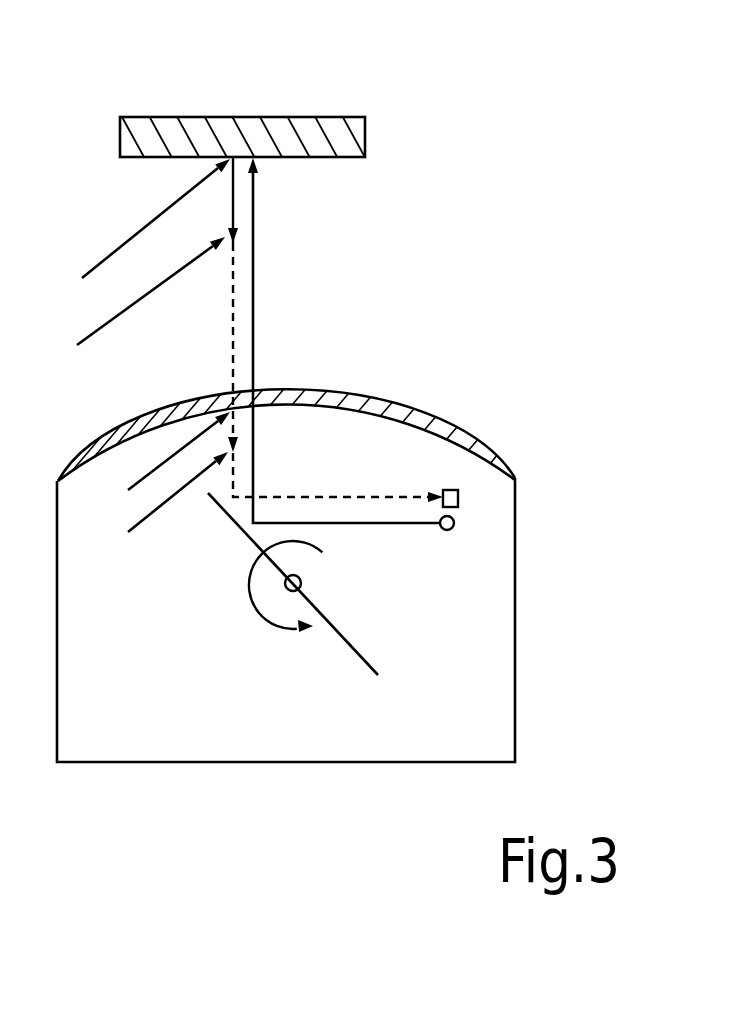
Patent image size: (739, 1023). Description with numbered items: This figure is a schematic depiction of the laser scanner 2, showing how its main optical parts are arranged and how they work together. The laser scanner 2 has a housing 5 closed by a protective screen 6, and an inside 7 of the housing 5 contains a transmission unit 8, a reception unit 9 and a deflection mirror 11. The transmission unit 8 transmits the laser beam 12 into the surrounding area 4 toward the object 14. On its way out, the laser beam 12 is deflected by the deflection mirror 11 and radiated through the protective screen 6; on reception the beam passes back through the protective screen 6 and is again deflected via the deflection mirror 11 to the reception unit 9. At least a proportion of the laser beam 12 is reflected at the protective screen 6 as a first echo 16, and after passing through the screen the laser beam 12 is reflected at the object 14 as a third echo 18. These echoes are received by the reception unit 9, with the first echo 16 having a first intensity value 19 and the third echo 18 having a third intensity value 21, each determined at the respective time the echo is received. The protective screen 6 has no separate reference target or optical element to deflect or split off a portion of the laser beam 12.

The laser scanner 2 is at (383, 495).
The surrounding area 4 is at (328, 248).
The housing 5 is at (515, 703).
The protective screen 6 is at (389, 400).
The inside 7 is at (157, 640).
The transmission unit 8 is at (454, 527).
The reception unit 9 is at (458, 497).
The deflection mirror 11 is at (345, 643).
The laser beam 12 is at (253, 303).
The object 14 is at (318, 116).
The first echo 16 is at (159, 463).
The third echo 18 is at (135, 230).
The first intensity value 19 is at (158, 502).
The third intensity value 21 is at (129, 304).